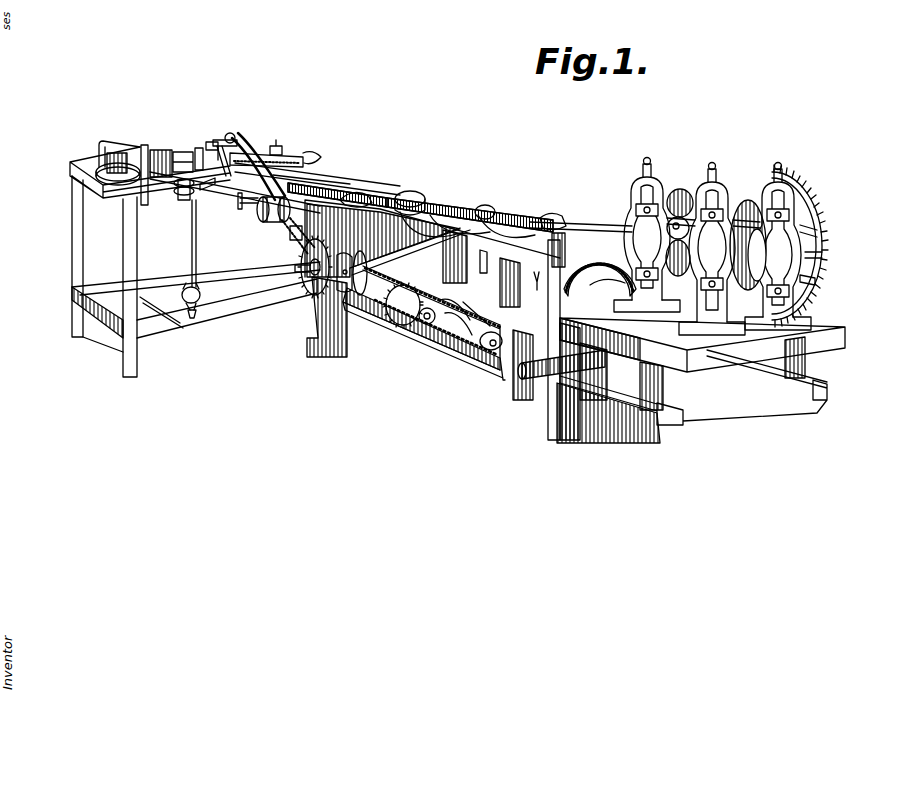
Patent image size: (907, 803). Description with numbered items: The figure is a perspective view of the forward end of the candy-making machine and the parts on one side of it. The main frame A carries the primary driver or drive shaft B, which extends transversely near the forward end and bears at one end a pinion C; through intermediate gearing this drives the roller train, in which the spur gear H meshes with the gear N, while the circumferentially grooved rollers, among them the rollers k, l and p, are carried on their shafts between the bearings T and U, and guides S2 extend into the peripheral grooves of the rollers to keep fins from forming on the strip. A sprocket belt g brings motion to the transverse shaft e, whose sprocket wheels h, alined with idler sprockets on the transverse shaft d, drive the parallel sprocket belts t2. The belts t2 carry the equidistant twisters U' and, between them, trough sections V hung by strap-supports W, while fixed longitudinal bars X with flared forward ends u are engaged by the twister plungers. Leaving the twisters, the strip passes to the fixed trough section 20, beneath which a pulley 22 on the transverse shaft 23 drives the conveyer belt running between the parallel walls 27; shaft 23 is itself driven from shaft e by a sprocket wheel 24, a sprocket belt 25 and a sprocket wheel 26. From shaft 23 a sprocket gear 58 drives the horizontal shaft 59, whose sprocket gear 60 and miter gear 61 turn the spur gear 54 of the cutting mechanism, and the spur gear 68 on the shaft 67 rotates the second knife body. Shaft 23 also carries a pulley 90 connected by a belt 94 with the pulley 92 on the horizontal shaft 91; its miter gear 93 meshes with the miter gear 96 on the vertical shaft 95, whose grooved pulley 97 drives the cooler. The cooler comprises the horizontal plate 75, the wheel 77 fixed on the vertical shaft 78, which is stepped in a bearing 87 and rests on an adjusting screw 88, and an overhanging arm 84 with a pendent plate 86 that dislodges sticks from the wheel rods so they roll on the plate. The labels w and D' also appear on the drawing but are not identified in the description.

The slab or plate 75 is at (70, 163).
The wheel 77 is at (73, 182).
The vertical shaft 78 is at (192, 253).
The bearing 87 is at (200, 298).
The screw 88 is at (190, 312).
The pendent plate 86 is at (105, 161).
The overhanging arm 84 is at (101, 145).
The horizontal shaft 91 is at (144, 146).
The pulley 92 is at (158, 150).
The miter gear 93 is at (180, 152).
The miter gear 96 is at (198, 148).
The vertical shaft 95 is at (184, 200).
The circumferentially grooved pulley 97 is at (209, 191).
The belt 94 is at (244, 199).
The horizontal shaft 59 is at (212, 142).
The sprocket gear 60 is at (231, 133).
The miter gear 61 is at (240, 150).
The spur gear 68 is at (270, 160).
The spur gear 54 is at (252, 155).
The shaft 67 is at (278, 145).
The sprocket gear 58 is at (314, 153).
The parallel walls 27 is at (322, 170).
The fixed trough section 20 is at (372, 186).
The pulley 22 is at (372, 197).
The transverse shaft 23 is at (272, 222).
The pulley 90 is at (258, 208).
The sprocket belt 25 is at (290, 234).
The sprocket wheel 26 is at (287, 232).
The pinion C is at (295, 270).
The sprocket wheel 24 is at (313, 300).
The main frame A is at (380, 305).
The sprocket wheels h is at (386, 289).
The transverse shaft e is at (385, 258).
The parallel sprocket belts t2 is at (415, 330).
The transverse shaft d is at (502, 341).
The flared forward ends u is at (533, 282).
The parallel longitudinal bars X is at (485, 205).
The trough sections V is at (512, 215).
The twisters U' is at (538, 273).
The strap-supports W is at (480, 345).
The pin w is at (606, 293).
The primary driver or drive-shaft B is at (555, 436).
The roller l is at (702, 367).
The bearing U is at (679, 231).
The bearing T is at (716, 183).
The sprocket belt g is at (680, 205).
The roller k is at (678, 269).
The roller p is at (748, 235).
The gear N is at (812, 204).
The shaft D' is at (828, 220).
The spur gear H is at (824, 256).
The guides S2 is at (818, 280).